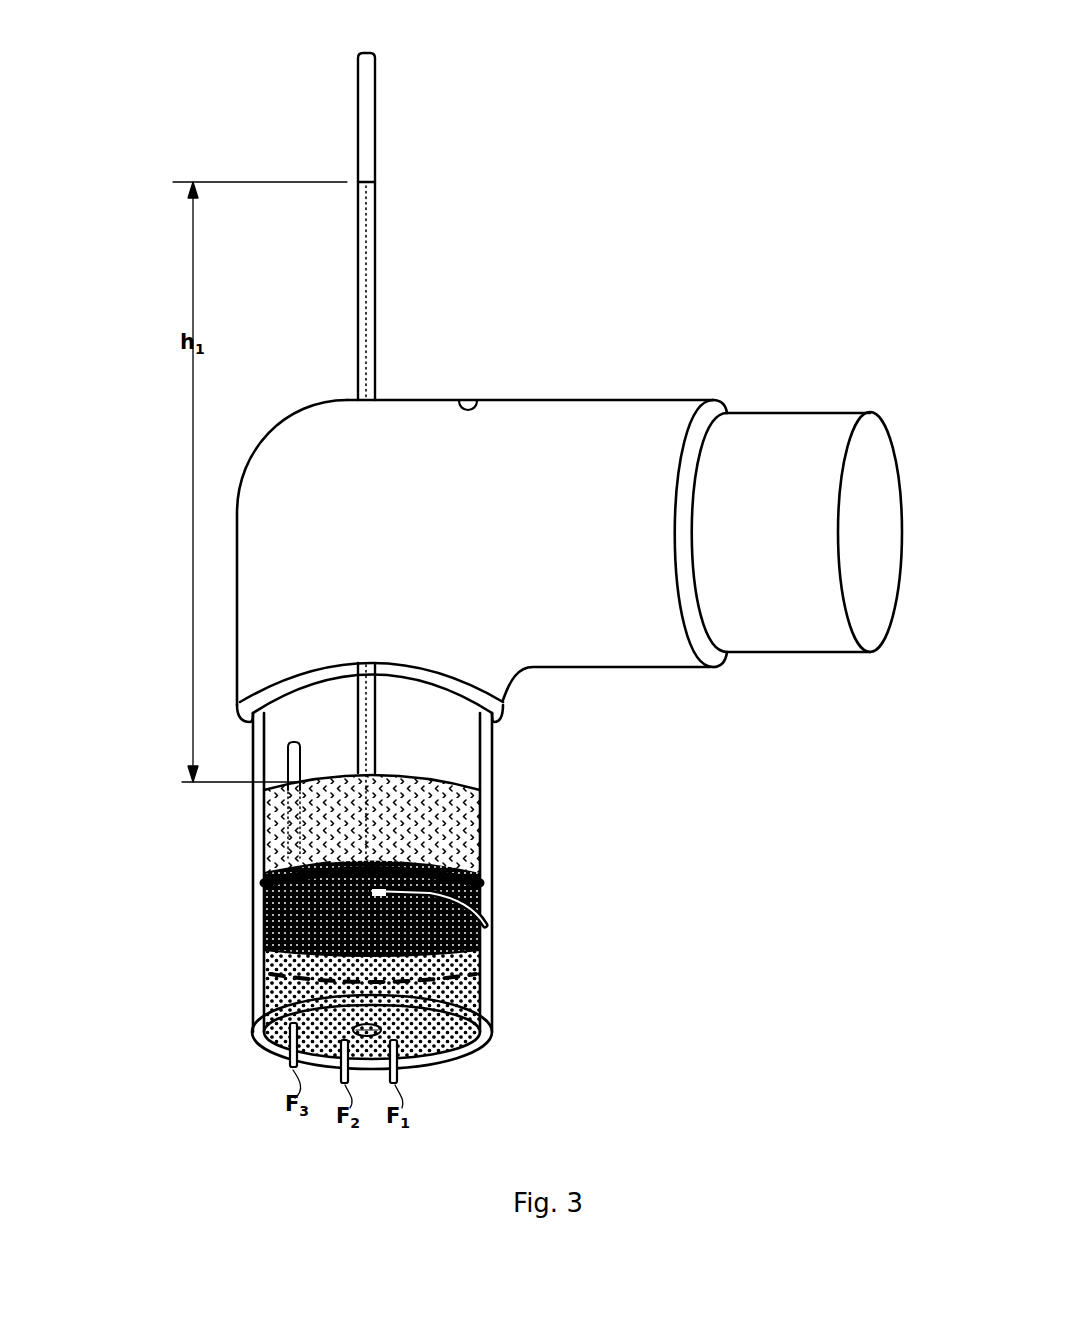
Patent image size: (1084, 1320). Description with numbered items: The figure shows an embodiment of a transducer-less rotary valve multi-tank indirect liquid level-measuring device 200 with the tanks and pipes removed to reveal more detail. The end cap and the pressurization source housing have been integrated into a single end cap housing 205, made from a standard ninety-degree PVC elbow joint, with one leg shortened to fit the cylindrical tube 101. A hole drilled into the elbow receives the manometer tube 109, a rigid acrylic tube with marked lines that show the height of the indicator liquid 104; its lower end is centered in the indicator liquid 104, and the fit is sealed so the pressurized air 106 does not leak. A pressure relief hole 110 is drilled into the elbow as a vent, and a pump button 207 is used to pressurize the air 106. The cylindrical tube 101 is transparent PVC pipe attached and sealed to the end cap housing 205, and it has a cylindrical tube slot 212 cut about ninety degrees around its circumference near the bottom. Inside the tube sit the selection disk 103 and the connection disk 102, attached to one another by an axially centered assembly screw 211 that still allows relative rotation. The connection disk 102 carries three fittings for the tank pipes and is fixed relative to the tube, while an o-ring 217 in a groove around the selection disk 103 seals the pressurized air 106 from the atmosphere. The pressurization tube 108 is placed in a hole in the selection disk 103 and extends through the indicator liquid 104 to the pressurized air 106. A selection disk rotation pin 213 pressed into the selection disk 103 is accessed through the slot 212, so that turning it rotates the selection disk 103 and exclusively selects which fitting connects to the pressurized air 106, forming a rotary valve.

The rotary valve indirect liquid level-measuring device 200 is at (129, 72).
The manometer tube 109 is at (358, 127).
The pressure relief hole 110 is at (463, 400).
The end cap housing 205 is at (556, 400).
The pump button 207 is at (790, 412).
The cylindrical tube 101 is at (495, 797).
The pressurized air 106 is at (293, 713).
The pressurization tube 108 is at (288, 768).
The indicator liquid 104 is at (280, 822).
The cylindrical tube slot 212 is at (480, 900).
The o-ring 217 is at (263, 891).
The selection disk rotation pin 213 is at (485, 930).
The selection disk 103 is at (264, 937).
The assembly screw 211 is at (382, 1032).
The connection disk 102 is at (280, 1030).